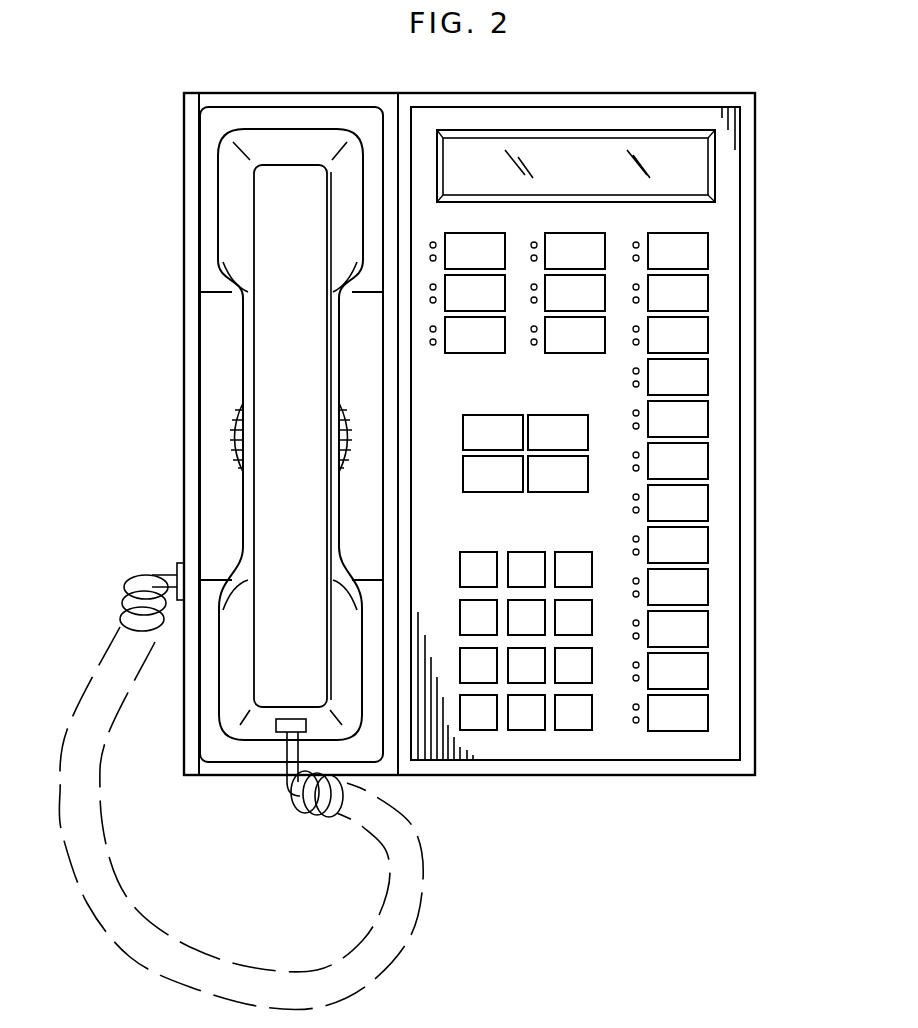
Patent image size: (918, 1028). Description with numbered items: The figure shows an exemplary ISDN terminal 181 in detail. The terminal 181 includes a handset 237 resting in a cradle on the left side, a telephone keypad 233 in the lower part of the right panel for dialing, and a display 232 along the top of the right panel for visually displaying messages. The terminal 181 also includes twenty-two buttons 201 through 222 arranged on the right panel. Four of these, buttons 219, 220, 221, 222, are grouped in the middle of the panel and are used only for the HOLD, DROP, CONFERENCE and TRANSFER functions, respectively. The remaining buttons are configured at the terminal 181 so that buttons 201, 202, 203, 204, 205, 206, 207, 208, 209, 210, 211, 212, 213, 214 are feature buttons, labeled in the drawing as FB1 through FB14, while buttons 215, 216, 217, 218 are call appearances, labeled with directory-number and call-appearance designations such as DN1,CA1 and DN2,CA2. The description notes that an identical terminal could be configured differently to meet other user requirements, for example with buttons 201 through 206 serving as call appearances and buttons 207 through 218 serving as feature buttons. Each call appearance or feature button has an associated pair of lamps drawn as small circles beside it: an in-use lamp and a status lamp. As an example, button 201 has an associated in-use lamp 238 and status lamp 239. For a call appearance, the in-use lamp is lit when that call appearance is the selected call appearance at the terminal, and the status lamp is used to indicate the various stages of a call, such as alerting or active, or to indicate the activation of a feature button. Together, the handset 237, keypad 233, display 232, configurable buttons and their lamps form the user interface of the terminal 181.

The ISDN terminal 181 is at (470, 93).
The button 201 is at (468, 233).
The button 202 is at (506, 281).
The button 203 is at (472, 354).
The button 204 is at (597, 233).
The button 205 is at (544, 309).
The button 206 is at (588, 353).
The button 207 is at (708, 251).
The button 208 is at (708, 293).
The button 209 is at (708, 335).
The button 210 is at (708, 377).
The button 211 is at (708, 419).
The button 212 is at (708, 461).
The button 213 is at (708, 503).
The button 214 is at (708, 545).
The button 215 is at (708, 587).
The button 216 is at (708, 629).
The button 217 is at (708, 671).
The button 218 is at (708, 713).
The button 219 is at (495, 416).
The button 220 is at (492, 492).
The button 221 is at (560, 416).
The button 222 is at (560, 492).
The display 232 is at (565, 160).
The telephone keypad 233 is at (529, 746).
The handset 237 is at (292, 383).
The in-use lamp 238 is at (436, 245).
The status lamp 239 is at (431, 258).